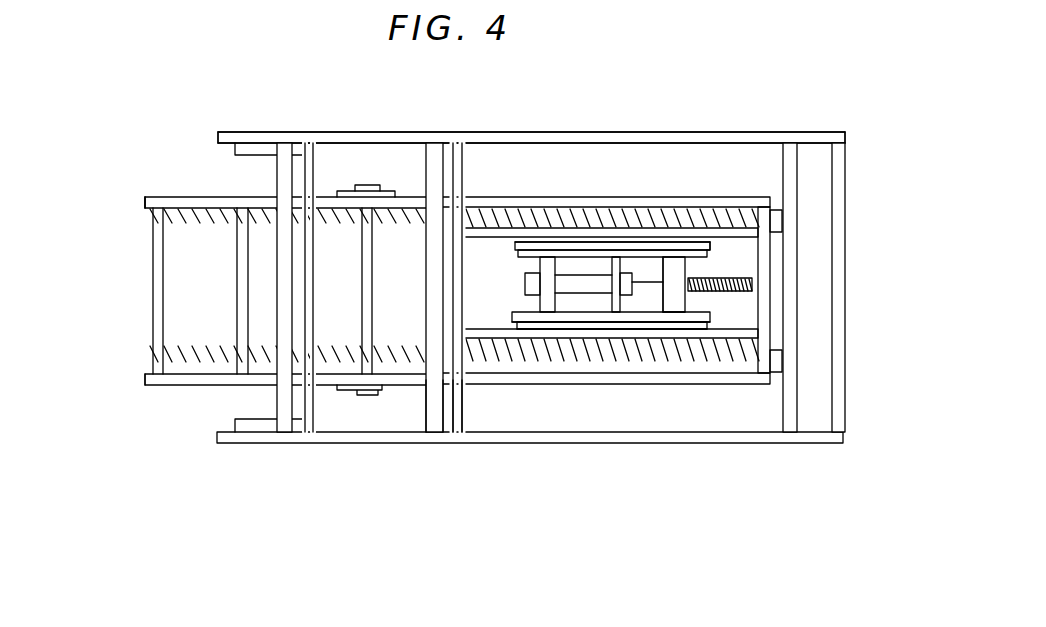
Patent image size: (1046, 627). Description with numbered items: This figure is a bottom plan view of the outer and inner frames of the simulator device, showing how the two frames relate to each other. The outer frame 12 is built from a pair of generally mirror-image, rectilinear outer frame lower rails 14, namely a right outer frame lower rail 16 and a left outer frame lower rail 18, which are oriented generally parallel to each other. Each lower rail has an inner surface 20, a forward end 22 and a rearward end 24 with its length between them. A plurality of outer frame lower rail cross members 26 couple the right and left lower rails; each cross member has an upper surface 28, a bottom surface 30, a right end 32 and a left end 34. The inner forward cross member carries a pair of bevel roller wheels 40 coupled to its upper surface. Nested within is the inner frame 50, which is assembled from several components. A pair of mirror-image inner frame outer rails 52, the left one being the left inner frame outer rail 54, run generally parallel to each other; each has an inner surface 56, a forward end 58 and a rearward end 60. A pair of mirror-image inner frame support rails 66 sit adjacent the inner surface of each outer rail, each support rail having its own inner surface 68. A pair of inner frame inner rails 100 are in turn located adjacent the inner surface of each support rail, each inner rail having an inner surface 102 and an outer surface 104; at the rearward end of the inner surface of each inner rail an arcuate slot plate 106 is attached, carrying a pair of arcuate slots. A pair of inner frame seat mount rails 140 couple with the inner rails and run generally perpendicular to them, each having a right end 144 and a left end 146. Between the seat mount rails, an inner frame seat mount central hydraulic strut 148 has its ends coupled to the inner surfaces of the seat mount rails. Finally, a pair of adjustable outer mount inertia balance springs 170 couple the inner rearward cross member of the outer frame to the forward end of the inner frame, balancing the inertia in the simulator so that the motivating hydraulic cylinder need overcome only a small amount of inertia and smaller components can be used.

The outer frame 12 is at (803, 129).
The outer frame lower rails 14 is at (630, 134).
The right outer frame lower rail 16 is at (569, 130).
The left outer frame lower rail 18 is at (551, 446).
The inner surface 20 is at (476, 146).
The forward end 22 is at (216, 129).
The rearward end 24 is at (854, 136).
The outer frame lower rail cross members 26 is at (432, 403).
The upper surface 28 is at (363, 267).
The bottom surface 30 is at (430, 173).
The right end 32 is at (453, 142).
The left end 34 is at (452, 405).
The bevel roller wheels 40 is at (354, 184).
The inner frame 50 is at (148, 263).
The inner frame outer rails 52 is at (395, 193).
The left inner frame outer rail 54 is at (347, 386).
The inner surface 56 is at (705, 365).
The forward end 58 is at (143, 192).
The rearward end 60 is at (752, 191).
The inner frame support rails 66 is at (742, 323).
The inner surface 68 is at (738, 240).
The inner frame inner rails 100 is at (691, 306).
The inner surface 102 is at (525, 263).
The outer surface 104 is at (590, 254).
The arcuate slot plate 106 is at (652, 325).
The inner frame seat mount rails 140 is at (672, 312).
The right end 144 is at (690, 270).
The left end 146 is at (680, 298).
The inner frame seat mount central hydraulic strut 148 is at (623, 312).
The adjustable outer mount inertia balance springs 170 is at (182, 210).